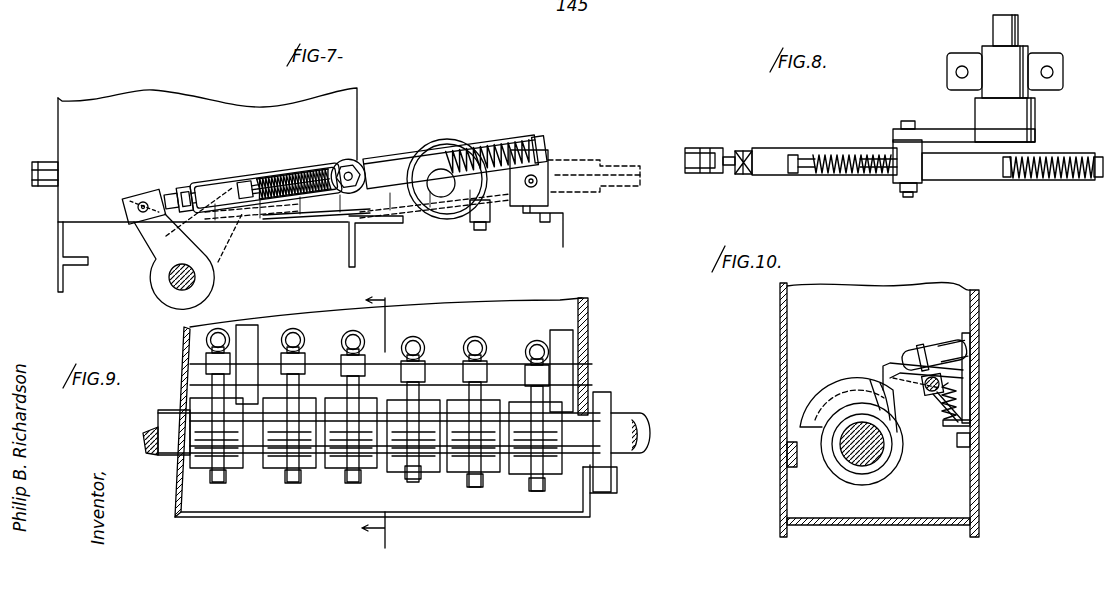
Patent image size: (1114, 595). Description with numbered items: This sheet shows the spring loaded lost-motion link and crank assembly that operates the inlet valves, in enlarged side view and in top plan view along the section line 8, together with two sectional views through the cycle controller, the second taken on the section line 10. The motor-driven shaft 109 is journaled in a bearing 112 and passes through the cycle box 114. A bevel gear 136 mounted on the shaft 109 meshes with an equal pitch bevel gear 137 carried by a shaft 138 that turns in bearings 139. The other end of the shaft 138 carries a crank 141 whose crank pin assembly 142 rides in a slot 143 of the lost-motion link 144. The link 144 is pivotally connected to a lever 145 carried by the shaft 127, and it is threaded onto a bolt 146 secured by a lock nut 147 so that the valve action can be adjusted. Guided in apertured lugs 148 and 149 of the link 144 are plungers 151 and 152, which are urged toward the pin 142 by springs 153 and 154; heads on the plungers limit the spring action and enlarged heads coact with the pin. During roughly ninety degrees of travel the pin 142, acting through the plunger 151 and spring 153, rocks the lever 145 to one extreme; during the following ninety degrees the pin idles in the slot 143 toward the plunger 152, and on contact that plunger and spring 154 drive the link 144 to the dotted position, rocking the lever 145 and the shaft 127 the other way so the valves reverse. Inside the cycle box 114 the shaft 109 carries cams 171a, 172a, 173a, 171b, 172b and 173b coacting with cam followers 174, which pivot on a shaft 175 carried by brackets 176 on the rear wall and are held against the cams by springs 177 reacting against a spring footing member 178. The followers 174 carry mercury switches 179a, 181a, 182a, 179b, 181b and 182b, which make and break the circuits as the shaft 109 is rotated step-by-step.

In FIG. 7, the section line 8- 8 is at (339, 176).
In FIG. 9, the section line 10- 10 is at (386, 420).
In FIG. 7, the shaft 109 is at (40, 162).
In FIG. 10, the shaft 109 is at (864, 462).
In FIG. 9, the shaft 109 is at (626, 414).
In FIG. 7, the bearing 112 is at (570, 165).
In FIG. 7, the cycle box 114 is at (122, 83).
In FIG. 10, the cycle box 114 is at (780, 308).
In FIG. 9, the cycle box 114 is at (588, 312).
In FIG. 7, the shaft 127 is at (172, 284).
In FIG. 7, the bevel gear 136 is at (482, 222).
In FIG. 7, the bevel gear 137 is at (440, 142).
In FIG. 7, the shaft 138 is at (441, 190).
In FIG. 8, the shaft 138 is at (1022, 36).
In FIG. 8, the bearings 139 is at (1034, 50).
In FIG. 8, the crank 141 is at (937, 124).
In FIG. 7, the crank pin assembly 142 is at (343, 167).
In FIG. 8, the crank pin assembly 142 is at (922, 178).
In FIG. 7, the slot 143 is at (377, 165).
In FIG. 8, the slot 143 is at (986, 173).
In FIG. 7, the lost-motion link 144 is at (272, 170).
In FIG. 8, the lost-motion link 144 is at (778, 150).
In FIG. 7, the lever 145 is at (150, 242).
In FIG. 8, the lever 145 is at (698, 148).
In FIG. 7, the bolt 146 is at (197, 188).
In FIG. 8, the bolt 146 is at (760, 146).
In FIG. 7, the lock nut 147 is at (174, 194).
In FIG. 8, the lock nut 147 is at (735, 168).
In FIG. 7, the apertured lug 148 is at (253, 180).
In FIG. 8, the apertured lug 148 is at (808, 176).
In FIG. 7, the apertured lug 149 is at (543, 138).
In FIG. 8, the apertured lug 149 is at (1098, 180).
In FIG. 7, the plunger 151 is at (281, 190).
In FIG. 8, the plunger 151 is at (843, 176).
In FIG. 7, the plunger 152 is at (470, 138).
In FIG. 8, the plunger 152 is at (1050, 178).
In FIG. 7, the spring 153 is at (302, 186).
In FIG. 8, the spring 153 is at (838, 148).
In FIG. 8, the spring 154 is at (1040, 158).
In FIG. 10, the cam 171a is at (872, 380).
In FIG. 9, the cam 171a is at (350, 484).
In FIG. 9, the cam 171b is at (417, 483).
In FIG. 9, the cam 172a is at (290, 484).
In FIG. 9, the cam 172b is at (472, 488).
In FIG. 9, the cam 173a is at (213, 483).
In FIG. 9, the cam 173b is at (536, 492).
In FIG. 10, the cam follower 174 is at (890, 366).
In FIG. 10, the shaft 175 is at (931, 396).
In FIG. 10, the bracket 176 is at (962, 350).
In FIG. 9, the bracket 176 is at (249, 335).
In FIG. 10, the spring 177 is at (956, 400).
In FIG. 10, the spring footing member 178 is at (970, 441).
In FIG. 10, the mercury switch 179a is at (912, 346).
In FIG. 9, the mercury switch 179a is at (353, 331).
In FIG. 9, the mercury switch 179b is at (420, 332).
In FIG. 9, the mercury switch 181a is at (293, 329).
In FIG. 9, the mercury switch 181b is at (478, 333).
In FIG. 9, the mercury switch 182a is at (218, 329).
In FIG. 9, the mercury switch 182b is at (537, 342).